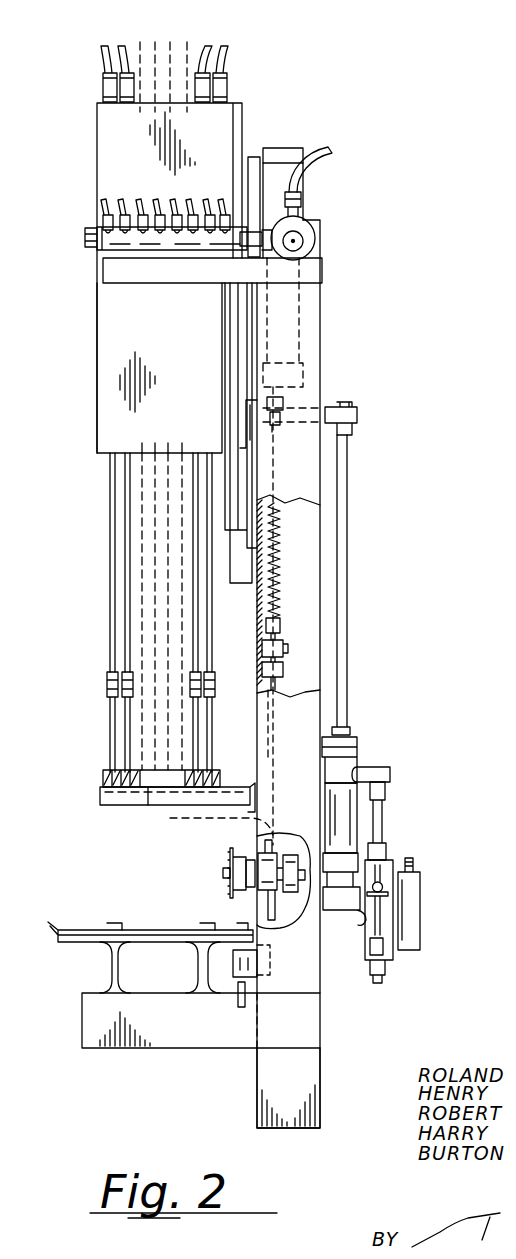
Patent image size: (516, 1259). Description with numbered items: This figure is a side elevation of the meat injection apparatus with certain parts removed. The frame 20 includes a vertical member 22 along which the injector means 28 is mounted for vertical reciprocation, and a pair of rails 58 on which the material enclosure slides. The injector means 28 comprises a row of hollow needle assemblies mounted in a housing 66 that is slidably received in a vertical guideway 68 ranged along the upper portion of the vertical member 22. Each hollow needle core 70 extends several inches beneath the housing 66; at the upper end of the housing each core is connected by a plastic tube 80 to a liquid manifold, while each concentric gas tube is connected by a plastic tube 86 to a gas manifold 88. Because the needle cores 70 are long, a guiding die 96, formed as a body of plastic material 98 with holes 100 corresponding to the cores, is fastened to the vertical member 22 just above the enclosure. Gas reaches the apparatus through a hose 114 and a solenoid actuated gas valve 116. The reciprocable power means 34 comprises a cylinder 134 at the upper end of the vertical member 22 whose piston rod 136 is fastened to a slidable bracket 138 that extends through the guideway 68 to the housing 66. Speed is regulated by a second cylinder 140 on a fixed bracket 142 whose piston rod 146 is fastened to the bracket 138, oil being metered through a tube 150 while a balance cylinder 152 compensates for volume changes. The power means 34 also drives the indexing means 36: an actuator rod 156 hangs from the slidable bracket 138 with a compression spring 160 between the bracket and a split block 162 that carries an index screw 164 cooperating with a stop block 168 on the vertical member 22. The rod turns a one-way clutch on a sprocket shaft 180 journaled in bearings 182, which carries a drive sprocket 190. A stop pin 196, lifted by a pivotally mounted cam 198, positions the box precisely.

The frame 20 is at (212, 1058).
The vertical member 22 is at (255, 1114).
The injector means 28 is at (180, 314).
The reciprocable power means 34 is at (309, 310).
The indexing means 36 is at (284, 894).
The rails 58 is at (116, 924).
The housing 66 is at (97, 418).
The vertical guideway 68 is at (222, 418).
The hollow needle core 70 is at (112, 729).
The plastic tube 80 is at (205, 45).
The plastic tube 86 is at (107, 212).
The gas manifold 88 is at (108, 248).
The guiding die 96 is at (110, 790).
The body of plastic material 98 is at (148, 789).
The holes 100 is at (120, 789).
The hose 114 is at (320, 160).
The solenoid actuated gas valve 116 is at (316, 226).
The cylinder 134 is at (300, 340).
The piston rod 136 is at (300, 400).
The slidable bracket 138 is at (357, 413).
The second cylinder 140 is at (357, 816).
The fixed bracket 142 is at (358, 746).
The piston rod 146 is at (348, 483).
The tube 150 is at (385, 836).
The balance cylinder 152 is at (422, 907).
The actuator rod 156 is at (188, 818).
The compression spring 160 is at (280, 556).
The split block 162 is at (283, 651).
The index screw 164 is at (280, 623).
The stop block 168 is at (283, 671).
The sprocket shaft 180 is at (223, 874).
The bearings 182 is at (250, 858).
The drive sprocket 190 is at (230, 858).
The stop pin 196 is at (243, 923).
The cam 198 is at (238, 1004).